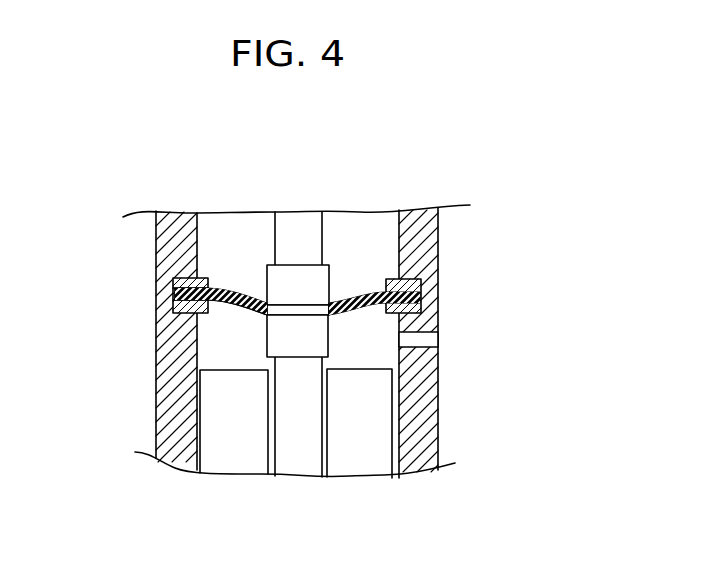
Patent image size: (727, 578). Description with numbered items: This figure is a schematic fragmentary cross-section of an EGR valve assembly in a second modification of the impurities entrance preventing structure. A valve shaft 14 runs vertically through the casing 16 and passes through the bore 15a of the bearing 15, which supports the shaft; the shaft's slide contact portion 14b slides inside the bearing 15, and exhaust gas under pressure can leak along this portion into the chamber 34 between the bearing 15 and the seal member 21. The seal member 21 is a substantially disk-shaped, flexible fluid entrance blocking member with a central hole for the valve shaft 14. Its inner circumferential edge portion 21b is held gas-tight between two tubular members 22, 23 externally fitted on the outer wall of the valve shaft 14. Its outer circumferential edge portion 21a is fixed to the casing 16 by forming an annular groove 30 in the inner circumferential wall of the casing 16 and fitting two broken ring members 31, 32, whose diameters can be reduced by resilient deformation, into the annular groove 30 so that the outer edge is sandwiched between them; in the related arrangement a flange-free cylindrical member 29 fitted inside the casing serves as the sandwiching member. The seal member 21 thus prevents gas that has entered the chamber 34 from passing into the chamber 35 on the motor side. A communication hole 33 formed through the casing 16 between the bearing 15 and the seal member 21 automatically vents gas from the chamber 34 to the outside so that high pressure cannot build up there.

The valve shaft 14 is at (298, 465).
The slide contact portion 14b is at (322, 418).
The bearing 15 is at (366, 463).
The bore 15a is at (275, 418).
The casing 16 is at (438, 238).
The seal member 21 is at (270, 306).
The outer circumferential edge portion 21a is at (422, 298).
The inner circumferential edge portion 21b is at (263, 312).
The tubular member 22 is at (272, 333).
The tubular member 23 is at (323, 282).
The cylindrical member 29 is at (209, 278).
The annular groove 30 is at (405, 279).
The broken ring member 31 is at (180, 310).
The broken ring member 32 is at (180, 282).
The communication hole 33 is at (430, 340).
The chamber 34 is at (373, 358).
The chamber 35 is at (385, 248).